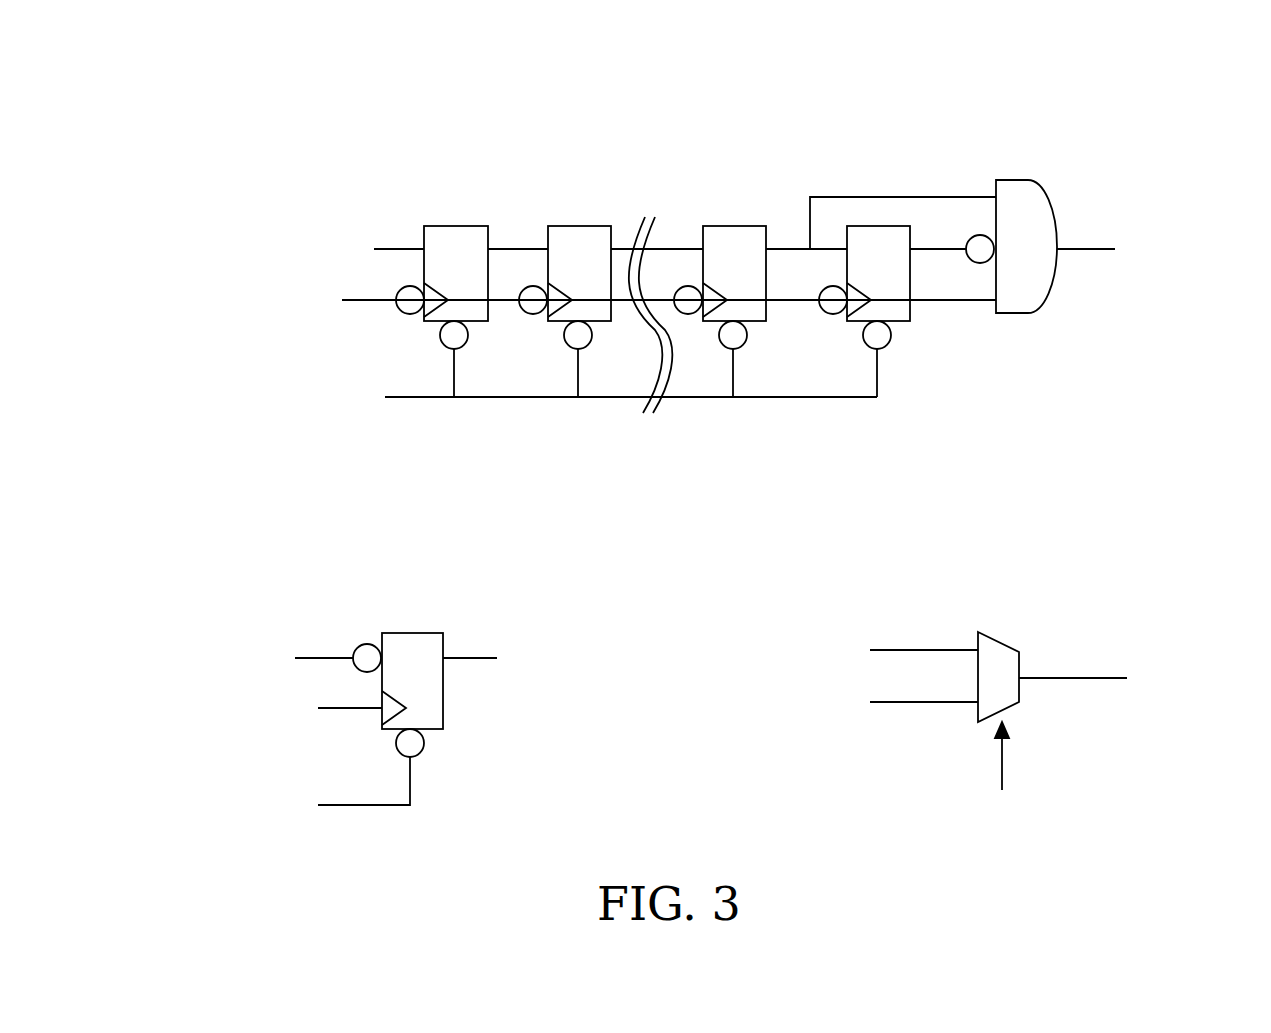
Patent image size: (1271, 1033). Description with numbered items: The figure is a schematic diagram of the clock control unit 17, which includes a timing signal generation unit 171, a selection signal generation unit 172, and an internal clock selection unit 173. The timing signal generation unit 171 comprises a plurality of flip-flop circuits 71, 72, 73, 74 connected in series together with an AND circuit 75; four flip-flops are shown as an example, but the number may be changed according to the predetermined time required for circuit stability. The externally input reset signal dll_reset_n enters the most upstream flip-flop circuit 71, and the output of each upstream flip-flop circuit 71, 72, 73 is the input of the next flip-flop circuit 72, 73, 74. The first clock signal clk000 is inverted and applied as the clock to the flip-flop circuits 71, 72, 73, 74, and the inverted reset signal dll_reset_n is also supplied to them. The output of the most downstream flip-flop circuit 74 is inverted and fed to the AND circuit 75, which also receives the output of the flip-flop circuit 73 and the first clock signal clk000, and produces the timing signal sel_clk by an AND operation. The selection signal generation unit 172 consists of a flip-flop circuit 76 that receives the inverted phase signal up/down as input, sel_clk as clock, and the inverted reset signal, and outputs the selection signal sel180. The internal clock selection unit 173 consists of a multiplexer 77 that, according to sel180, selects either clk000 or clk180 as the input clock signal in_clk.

The clock control unit 17 is at (112, 157).
The timing signal generation unit 171 is at (380, 182).
The selection signal generation unit 172 is at (278, 557).
The internal clock selection unit 173 is at (915, 595).
The flip-flop circuit 71 is at (445, 226).
The flip-flop circuit 72 is at (567, 226).
The flip-flop circuit 73 is at (720, 226).
The flip-flop circuit 74 is at (900, 322).
The AND circuit 75 is at (1028, 187).
The flip-flop circuit 76 is at (417, 637).
The multiplexer 77 is at (995, 637).